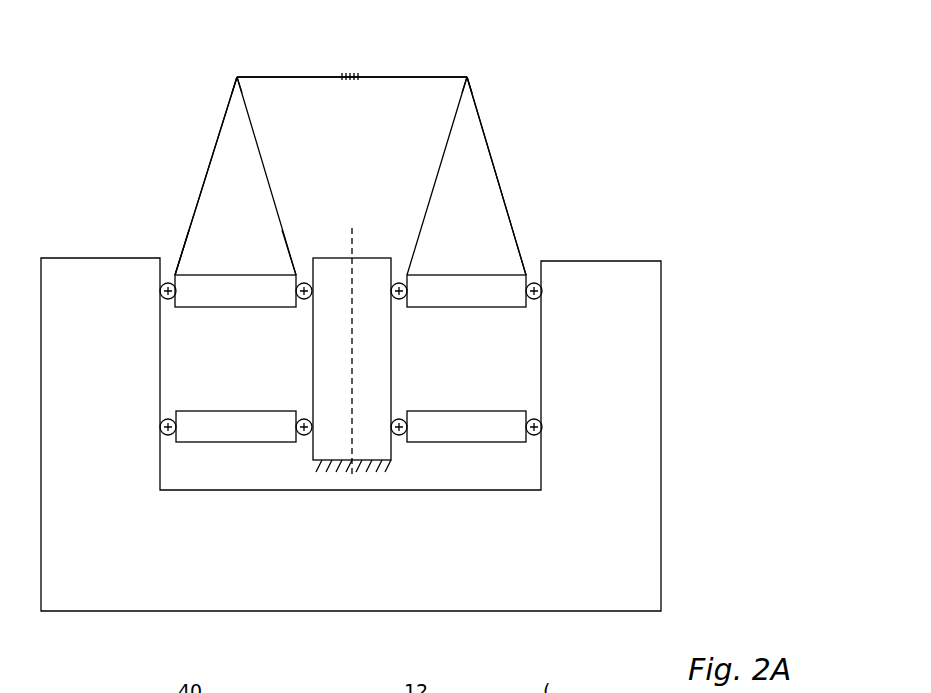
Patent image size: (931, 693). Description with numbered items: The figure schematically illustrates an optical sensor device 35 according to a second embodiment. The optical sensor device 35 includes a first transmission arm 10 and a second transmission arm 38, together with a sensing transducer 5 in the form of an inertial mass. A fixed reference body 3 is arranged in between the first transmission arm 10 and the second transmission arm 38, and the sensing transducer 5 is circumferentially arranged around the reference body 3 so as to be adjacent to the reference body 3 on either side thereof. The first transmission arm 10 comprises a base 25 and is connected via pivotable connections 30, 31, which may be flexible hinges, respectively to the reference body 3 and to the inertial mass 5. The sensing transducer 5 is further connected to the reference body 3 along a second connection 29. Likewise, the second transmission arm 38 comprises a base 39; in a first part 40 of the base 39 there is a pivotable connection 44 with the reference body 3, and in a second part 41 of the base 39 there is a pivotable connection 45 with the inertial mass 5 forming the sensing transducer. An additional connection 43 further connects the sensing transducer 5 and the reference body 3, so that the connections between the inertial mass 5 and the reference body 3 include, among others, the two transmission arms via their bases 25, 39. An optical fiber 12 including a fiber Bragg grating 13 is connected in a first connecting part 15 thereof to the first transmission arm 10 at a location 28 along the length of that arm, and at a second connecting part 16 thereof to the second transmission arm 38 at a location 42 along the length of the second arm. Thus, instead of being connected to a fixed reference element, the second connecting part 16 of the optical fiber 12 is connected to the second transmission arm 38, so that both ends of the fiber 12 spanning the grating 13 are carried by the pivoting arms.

The fixed reference body 3 is at (371, 257).
The sensing transducer 5 is at (612, 260).
The first transmission arm 10 is at (493, 160).
The optical fiber 12 is at (398, 75).
The fiber Bragg grating 13 is at (350, 73).
The first connecting part 15 is at (468, 76).
The second connecting part 16 is at (237, 76).
The base 25 is at (468, 309).
The location 28 is at (469, 78).
The second connection 29 is at (467, 443).
The pivotable connection 30 is at (400, 304).
The pivotable connection 31 is at (535, 304).
The optical sensor device 35 is at (100, 118).
The second transmission arm 38 is at (207, 176).
The base 39 is at (232, 308).
The first part 40 is at (297, 274).
The second part 41 is at (175, 274).
The location 42 is at (237, 78).
The additional connection 43 is at (238, 443).
The pivotable connection 44 is at (306, 304).
The pivotable connection 45 is at (170, 306).